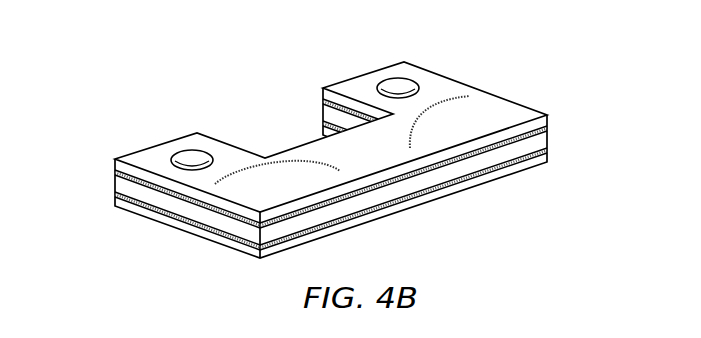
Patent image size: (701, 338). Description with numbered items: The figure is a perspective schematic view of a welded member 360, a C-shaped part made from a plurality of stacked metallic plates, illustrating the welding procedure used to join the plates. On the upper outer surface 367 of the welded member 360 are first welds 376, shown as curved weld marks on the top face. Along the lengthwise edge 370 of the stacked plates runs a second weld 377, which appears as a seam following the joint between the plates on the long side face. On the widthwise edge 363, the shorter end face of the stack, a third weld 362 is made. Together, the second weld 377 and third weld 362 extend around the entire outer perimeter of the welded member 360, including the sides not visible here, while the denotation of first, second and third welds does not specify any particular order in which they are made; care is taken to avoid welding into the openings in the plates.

The welded member 360 is at (215, 82).
The third weld 362 is at (108, 178).
The widthwise edge 363 is at (185, 207).
The outer surface 367 is at (388, 157).
The lengthwise edge 370 is at (428, 197).
The first weld 376 is at (248, 162).
The second weld 377 is at (233, 166).